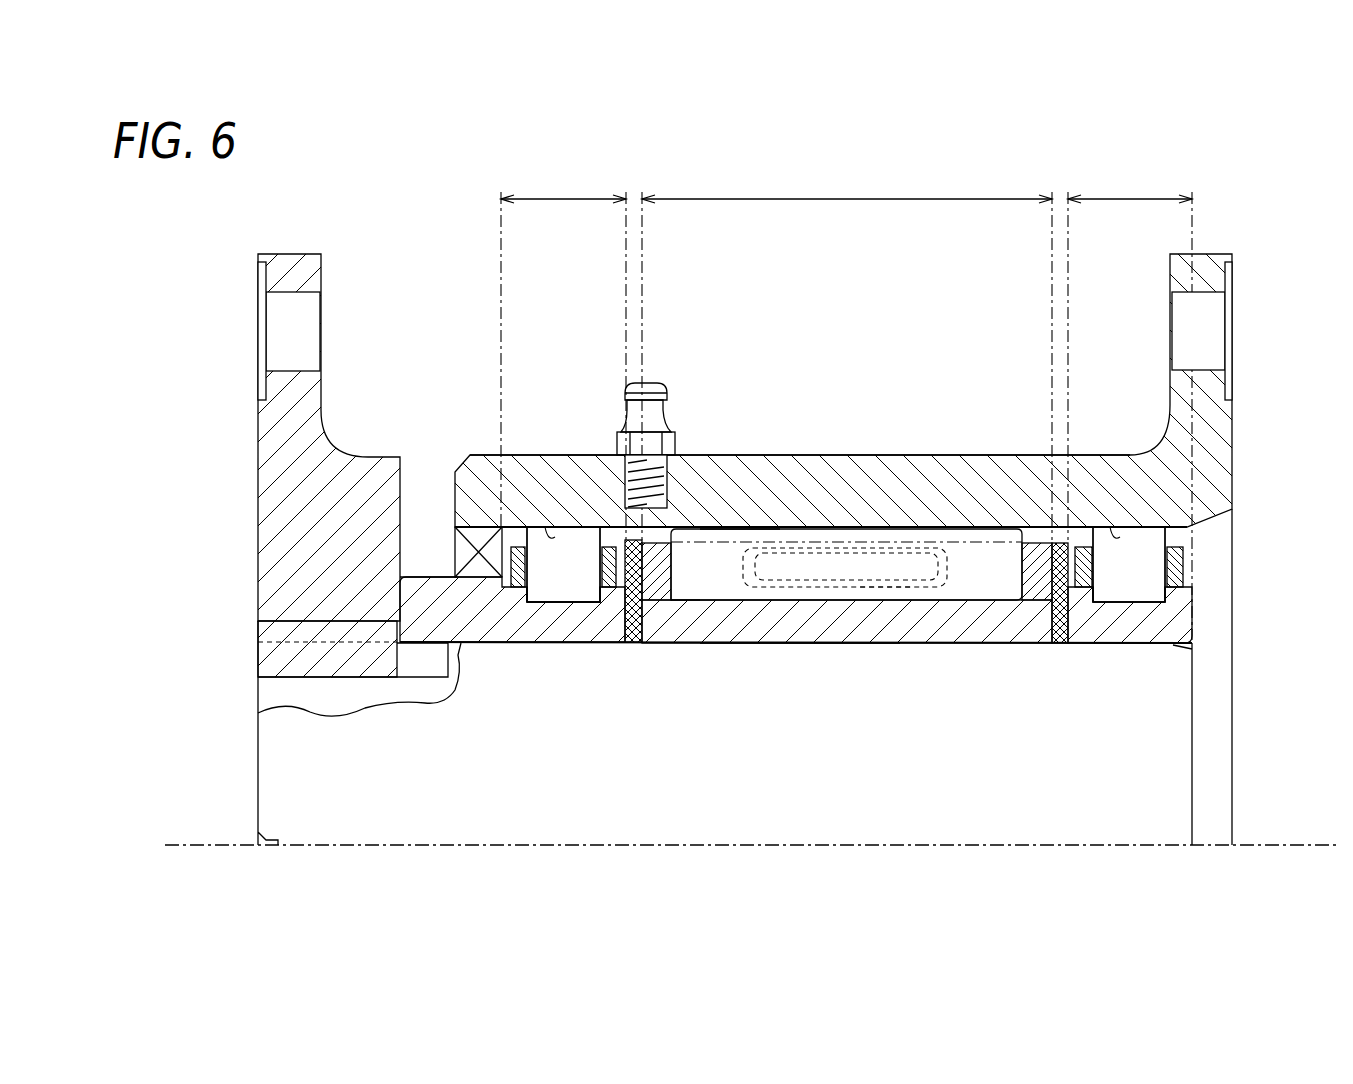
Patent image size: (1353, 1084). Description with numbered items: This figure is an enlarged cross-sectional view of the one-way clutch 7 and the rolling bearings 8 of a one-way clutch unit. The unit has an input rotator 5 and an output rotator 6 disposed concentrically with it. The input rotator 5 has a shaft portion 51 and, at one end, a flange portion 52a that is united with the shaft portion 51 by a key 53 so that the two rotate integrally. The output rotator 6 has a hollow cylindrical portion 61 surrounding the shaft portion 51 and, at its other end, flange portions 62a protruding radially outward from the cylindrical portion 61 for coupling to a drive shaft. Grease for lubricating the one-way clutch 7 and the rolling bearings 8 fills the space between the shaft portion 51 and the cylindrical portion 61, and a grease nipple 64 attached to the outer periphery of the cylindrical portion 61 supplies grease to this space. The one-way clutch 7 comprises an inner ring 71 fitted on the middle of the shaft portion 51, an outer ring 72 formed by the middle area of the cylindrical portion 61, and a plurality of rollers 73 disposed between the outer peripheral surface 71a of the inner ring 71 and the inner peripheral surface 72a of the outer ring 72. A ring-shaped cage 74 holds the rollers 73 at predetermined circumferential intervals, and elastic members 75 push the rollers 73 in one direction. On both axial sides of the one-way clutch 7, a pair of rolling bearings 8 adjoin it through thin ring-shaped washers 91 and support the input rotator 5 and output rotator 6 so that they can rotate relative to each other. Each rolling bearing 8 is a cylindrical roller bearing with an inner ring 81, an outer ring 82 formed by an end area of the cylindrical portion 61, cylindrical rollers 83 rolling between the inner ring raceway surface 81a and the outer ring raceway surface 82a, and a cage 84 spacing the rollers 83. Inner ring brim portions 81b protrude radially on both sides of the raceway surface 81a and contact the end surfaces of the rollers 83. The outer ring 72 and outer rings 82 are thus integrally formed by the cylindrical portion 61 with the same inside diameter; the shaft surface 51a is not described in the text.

The input rotator 5 is at (381, 330).
The flange portion 52a is at (331, 250).
The key 53 is at (280, 660).
The output rotator 6 is at (1256, 272).
The cylindrical portion 61 is at (905, 455).
The flange portions 62a is at (1203, 250).
The grease nipple 64 is at (652, 385).
The one-way clutch 7 is at (865, 450).
The inner ring 71 is at (838, 628).
The outer peripheral surface 71a is at (724, 590).
The outer ring 72 is at (846, 383).
The inner peripheral surface 72a is at (740, 535).
The rollers 73 is at (977, 585).
The cage 74 is at (645, 588).
The elastic members 75 is at (887, 587).
The rolling bearings 8 is at (570, 450).
The inner ring 81 is at (503, 578).
The inner ring raceway surface 81a is at (560, 592).
The inner ring brim portions 81b is at (490, 590).
The outer ring 82 is at (846, 384).
The outer ring raceway surface 82a is at (545, 540).
The cylindrical rollers 83 is at (548, 587).
The cage 84 is at (605, 555).
The washers 91 is at (633, 643).
The shaft portion 51 is at (690, 812).
The shaft outer surface 51a is at (779, 630).